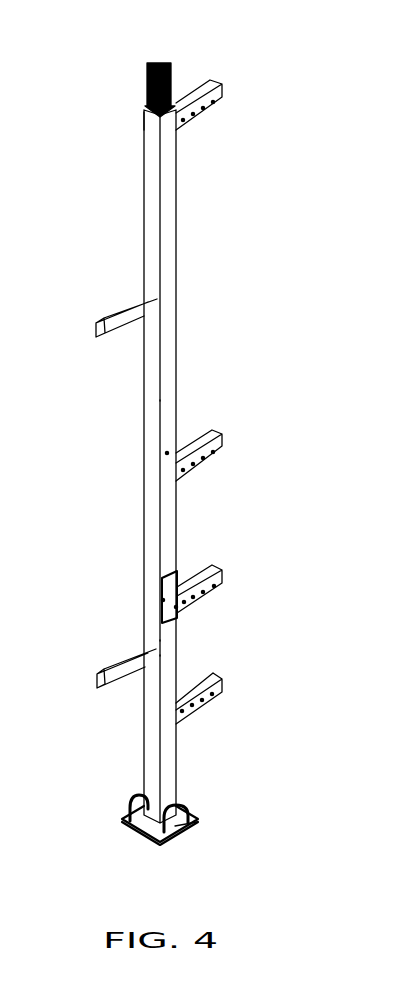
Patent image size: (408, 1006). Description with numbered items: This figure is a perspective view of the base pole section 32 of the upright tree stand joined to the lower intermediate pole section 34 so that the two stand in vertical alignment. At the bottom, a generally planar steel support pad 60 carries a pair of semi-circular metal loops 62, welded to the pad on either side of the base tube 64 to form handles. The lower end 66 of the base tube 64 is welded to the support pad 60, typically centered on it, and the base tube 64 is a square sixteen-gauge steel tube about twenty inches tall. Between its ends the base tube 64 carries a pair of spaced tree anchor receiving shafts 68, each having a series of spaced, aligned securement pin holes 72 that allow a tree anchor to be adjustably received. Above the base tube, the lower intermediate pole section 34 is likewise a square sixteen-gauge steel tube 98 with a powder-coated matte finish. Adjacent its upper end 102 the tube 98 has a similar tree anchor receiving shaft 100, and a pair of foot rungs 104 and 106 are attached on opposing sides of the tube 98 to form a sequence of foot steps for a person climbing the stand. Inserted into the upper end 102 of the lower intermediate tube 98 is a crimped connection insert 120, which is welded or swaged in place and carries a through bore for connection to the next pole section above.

The base pole section 32 is at (268, 640).
The lower intermediate pole section 34 is at (194, 312).
The support pad 60 is at (146, 827).
The semi-circular metal loops 62 is at (190, 812).
The base tube 64 is at (187, 652).
The lower end of base tube 66 is at (192, 830).
The tree anchor receiving shafts 68 is at (208, 571).
The securement pin holes 72 is at (212, 598).
The lower intermediate tube 98 is at (180, 384).
The tree anchor receiving shaft 100 is at (214, 87).
The upper end of lower intermediate tube 102 is at (143, 121).
The foot rung 104 is at (207, 460).
The foot rung 106 is at (117, 313).
The crimped connection insert 120 is at (180, 65).